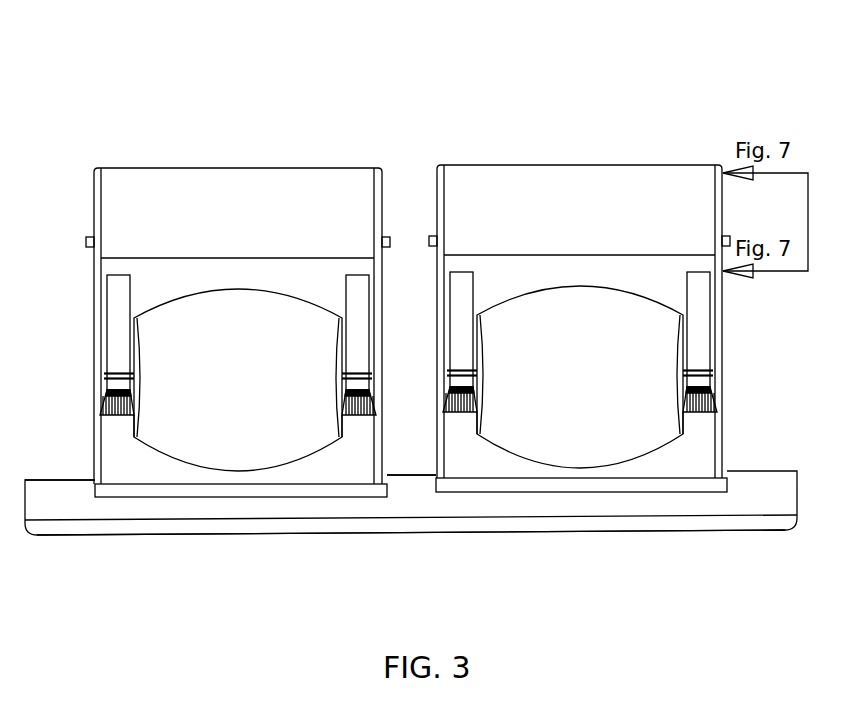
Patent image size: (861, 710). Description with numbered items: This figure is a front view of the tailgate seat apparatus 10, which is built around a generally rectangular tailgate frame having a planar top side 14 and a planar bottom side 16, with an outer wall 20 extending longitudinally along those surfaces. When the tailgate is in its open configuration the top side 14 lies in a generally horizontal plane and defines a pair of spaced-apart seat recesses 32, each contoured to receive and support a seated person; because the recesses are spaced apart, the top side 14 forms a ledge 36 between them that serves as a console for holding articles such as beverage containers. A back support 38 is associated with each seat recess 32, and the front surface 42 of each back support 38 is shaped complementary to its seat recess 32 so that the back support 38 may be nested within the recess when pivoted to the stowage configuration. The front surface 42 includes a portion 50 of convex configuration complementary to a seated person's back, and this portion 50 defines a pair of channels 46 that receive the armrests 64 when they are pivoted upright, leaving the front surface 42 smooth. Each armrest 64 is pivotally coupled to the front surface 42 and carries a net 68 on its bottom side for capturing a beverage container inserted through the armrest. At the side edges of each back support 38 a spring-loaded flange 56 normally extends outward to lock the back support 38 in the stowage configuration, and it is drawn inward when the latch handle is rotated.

The tailgate seat apparatus 10 is at (318, 78).
The top side 14 is at (60, 479).
The bottom side 16 is at (183, 535).
The outer wall 20 is at (356, 513).
The seat recess 32 is at (270, 493).
The ledge 36 is at (415, 473).
The back support 38 is at (78, 158).
The front surface 42 is at (408, 223).
The channel 46 is at (133, 292).
The portion 50 is at (408, 378).
The spring-loaded flange 56 is at (86, 243).
The armrest 64 is at (118, 373).
The net 68 is at (132, 404).